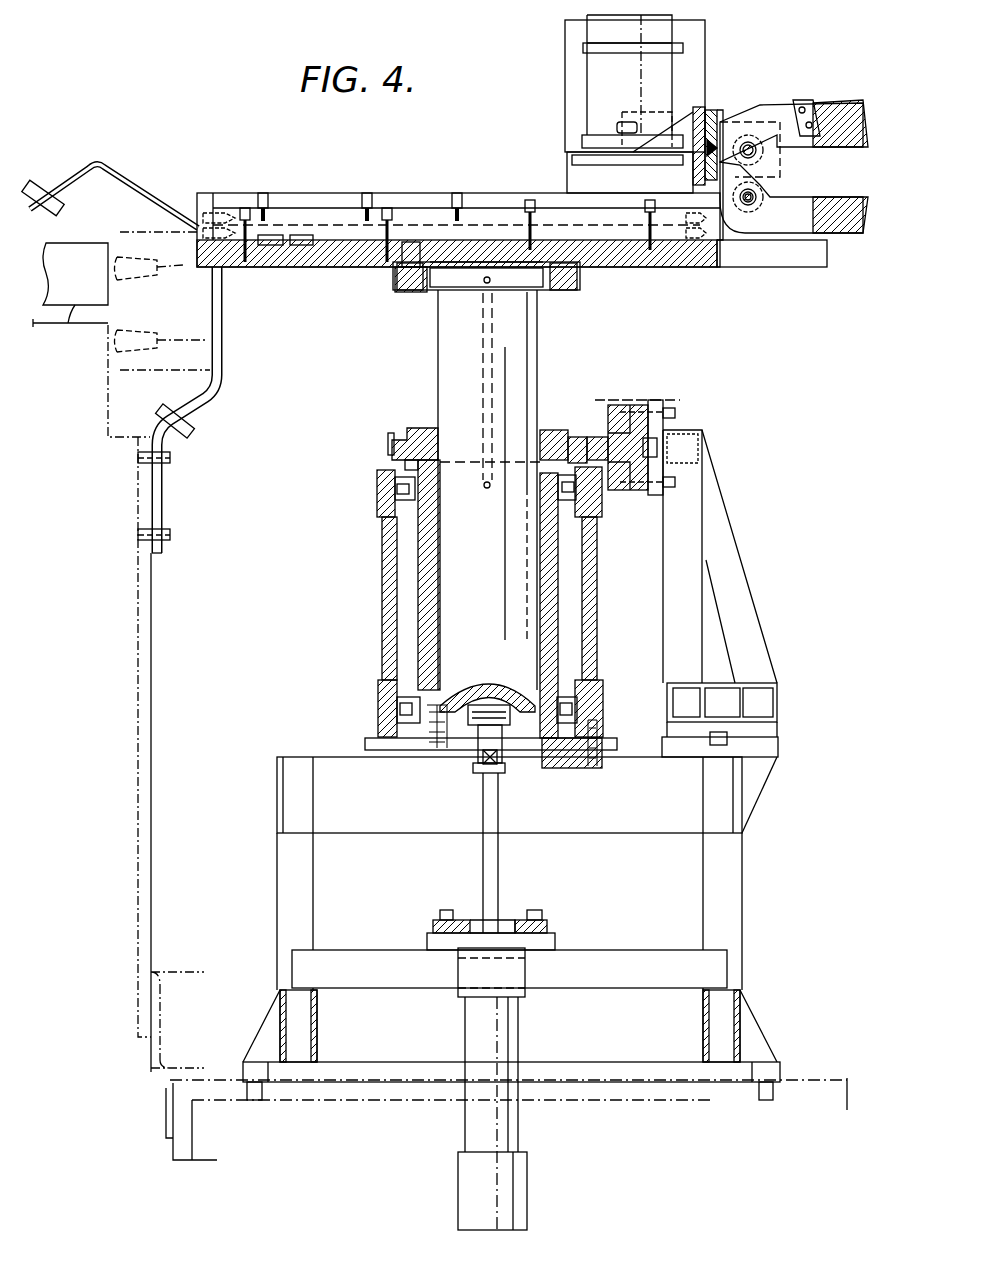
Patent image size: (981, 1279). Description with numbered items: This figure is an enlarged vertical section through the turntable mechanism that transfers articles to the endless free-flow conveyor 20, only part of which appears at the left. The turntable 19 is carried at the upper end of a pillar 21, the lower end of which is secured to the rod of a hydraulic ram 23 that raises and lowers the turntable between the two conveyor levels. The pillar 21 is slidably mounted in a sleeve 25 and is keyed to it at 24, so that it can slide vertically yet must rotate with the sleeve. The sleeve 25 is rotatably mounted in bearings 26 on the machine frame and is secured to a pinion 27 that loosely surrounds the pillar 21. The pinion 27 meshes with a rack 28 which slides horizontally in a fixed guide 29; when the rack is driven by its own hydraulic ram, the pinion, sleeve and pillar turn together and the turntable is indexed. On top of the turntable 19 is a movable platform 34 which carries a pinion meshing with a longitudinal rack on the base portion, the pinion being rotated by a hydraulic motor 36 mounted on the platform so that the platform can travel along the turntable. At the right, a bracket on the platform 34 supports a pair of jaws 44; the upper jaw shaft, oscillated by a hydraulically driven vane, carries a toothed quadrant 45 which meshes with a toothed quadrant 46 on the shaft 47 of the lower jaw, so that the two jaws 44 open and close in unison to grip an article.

The turntable 19 is at (736, 274).
The endless free-flow conveyor 20 is at (62, 294).
The pillar 21 is at (518, 375).
The hydraulic ram 23 is at (503, 1137).
The key 24 is at (545, 690).
The sleeve 25 is at (430, 598).
The bearings 26 is at (400, 495).
The pinion 27 is at (393, 440).
The rack 28 is at (600, 443).
The fixed guide 29 is at (645, 433).
The movable platform 34 is at (585, 177).
The hydraulic motor 36 is at (610, 84).
The jaws 44 is at (858, 104).
The toothed quadrant 45 is at (767, 163).
The toothed quadrant 46 is at (767, 186).
The shaft 47 is at (748, 200).